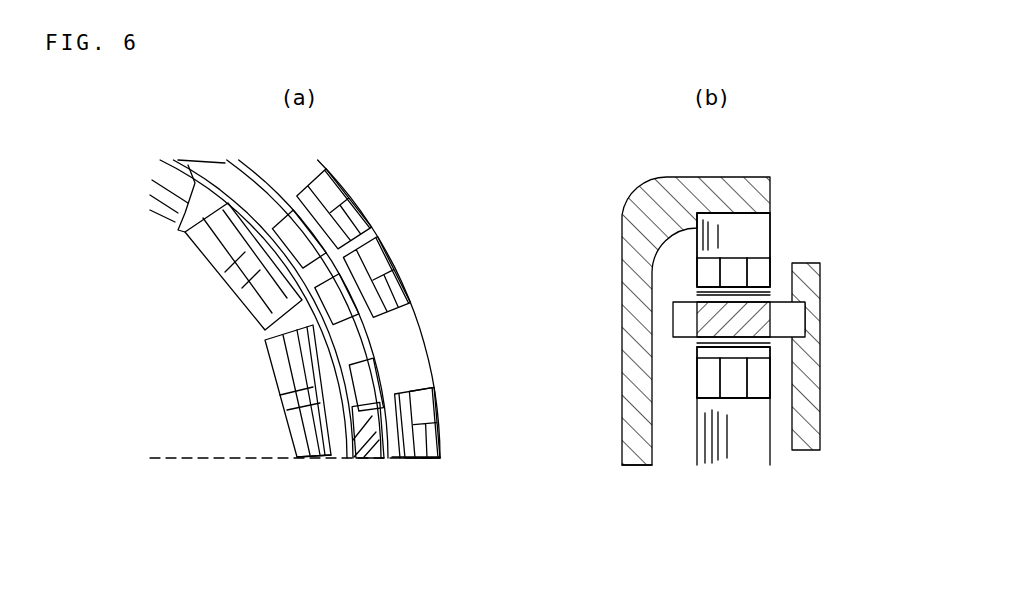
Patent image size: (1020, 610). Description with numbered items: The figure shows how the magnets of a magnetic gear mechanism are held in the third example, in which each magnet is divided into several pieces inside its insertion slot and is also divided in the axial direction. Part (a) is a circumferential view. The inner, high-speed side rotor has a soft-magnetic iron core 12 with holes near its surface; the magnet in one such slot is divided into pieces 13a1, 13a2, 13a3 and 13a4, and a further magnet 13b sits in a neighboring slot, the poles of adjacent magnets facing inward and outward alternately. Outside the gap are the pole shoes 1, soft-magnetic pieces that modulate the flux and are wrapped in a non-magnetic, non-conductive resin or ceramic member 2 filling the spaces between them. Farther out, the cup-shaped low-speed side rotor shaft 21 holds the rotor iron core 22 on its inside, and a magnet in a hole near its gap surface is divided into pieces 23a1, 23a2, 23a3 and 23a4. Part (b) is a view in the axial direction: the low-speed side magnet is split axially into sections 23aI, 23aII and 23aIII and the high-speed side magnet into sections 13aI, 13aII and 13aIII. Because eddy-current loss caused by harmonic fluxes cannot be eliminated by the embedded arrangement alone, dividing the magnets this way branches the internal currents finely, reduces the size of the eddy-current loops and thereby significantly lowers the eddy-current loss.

The pole shoe 1 is at (374, 458).
The member 2 is at (367, 395).
The iron core 12 is at (248, 243).
The permanent magnet 13b is at (203, 242).
The magnet segment 13a1 is at (273, 352).
The magnet segment 13a2 is at (300, 378).
The magnet segment 13a3 is at (295, 437).
The magnet segment 13a4 is at (322, 456).
The low-speed side rotor shaft 21 is at (632, 315).
The rotor iron core 22 is at (390, 283).
The stator pole segment 23a1 is at (417, 387).
The stator pole segment 23a2 is at (433, 408).
The stator pole segment 23a3 is at (433, 437).
The stator pole segment 23a4 is at (428, 450).
The stator pole segment 23aI is at (707, 270).
The stator pole segment 23aII is at (733, 267).
The stator pole segment 23aIII is at (753, 267).
The magnet segment 13aI is at (707, 383).
The magnet segment 13aII is at (732, 383).
The magnet segment 13aIII is at (760, 383).